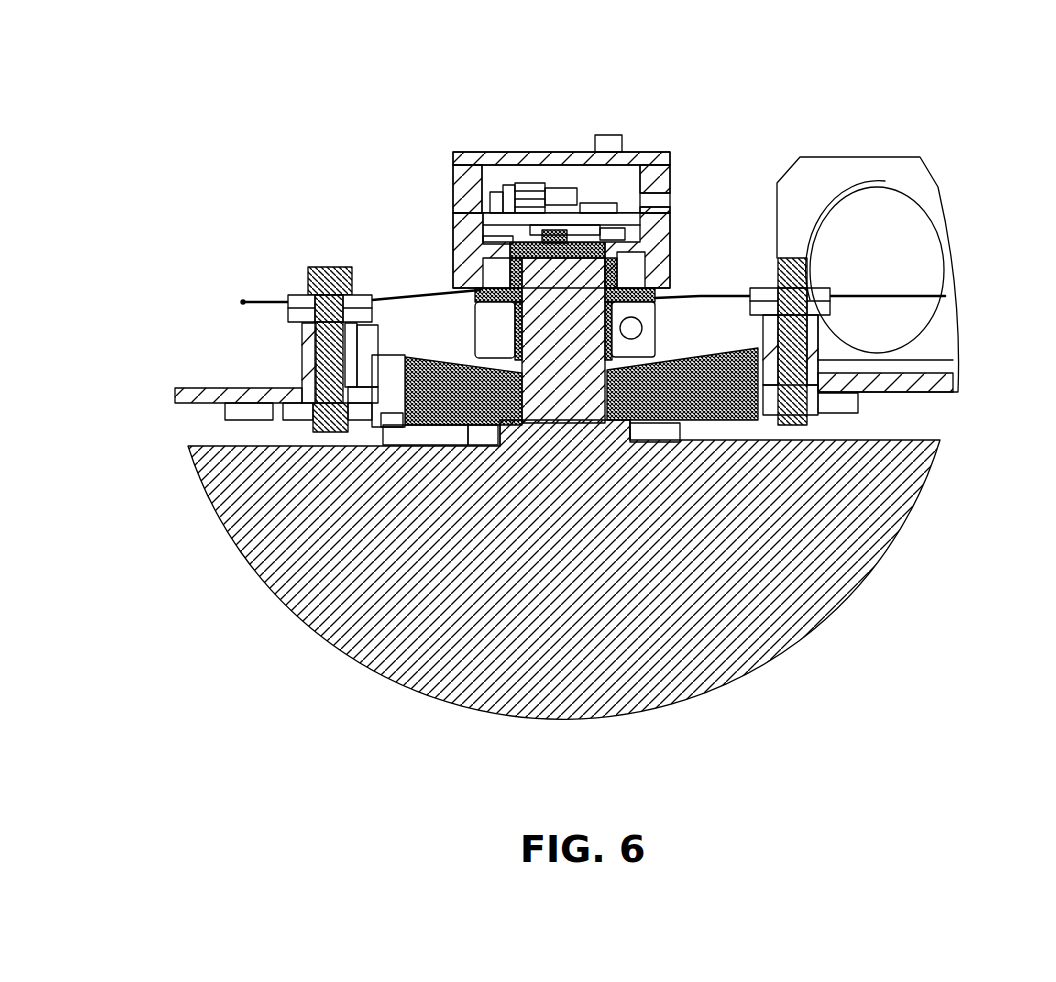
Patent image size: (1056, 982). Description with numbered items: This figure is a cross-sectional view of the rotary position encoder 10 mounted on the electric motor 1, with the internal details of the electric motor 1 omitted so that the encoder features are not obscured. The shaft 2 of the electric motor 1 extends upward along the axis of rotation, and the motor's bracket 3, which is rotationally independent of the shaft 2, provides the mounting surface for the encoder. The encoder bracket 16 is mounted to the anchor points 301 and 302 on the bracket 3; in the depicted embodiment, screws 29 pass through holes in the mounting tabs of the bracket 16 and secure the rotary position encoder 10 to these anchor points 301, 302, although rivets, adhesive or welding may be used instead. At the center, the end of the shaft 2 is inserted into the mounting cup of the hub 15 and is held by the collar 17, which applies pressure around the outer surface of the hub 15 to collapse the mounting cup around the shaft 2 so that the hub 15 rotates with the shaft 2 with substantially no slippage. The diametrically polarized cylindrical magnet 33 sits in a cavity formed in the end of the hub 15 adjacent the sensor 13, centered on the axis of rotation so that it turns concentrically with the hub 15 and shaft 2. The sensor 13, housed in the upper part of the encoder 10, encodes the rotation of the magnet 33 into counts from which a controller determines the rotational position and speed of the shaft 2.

The electric motor 1 is at (940, 614).
The shaft 2 is at (545, 345).
The bracket 3 is at (920, 386).
The rotary position encoder 10 is at (670, 120).
The sensor 13 is at (552, 240).
The hub 15 is at (660, 336).
The bracket 16 is at (243, 302).
The collar 17 is at (655, 300).
The screws 29 is at (312, 268).
The magnet 33 is at (515, 237).
The anchor point 301 is at (305, 365).
The anchor point 302 is at (812, 352).